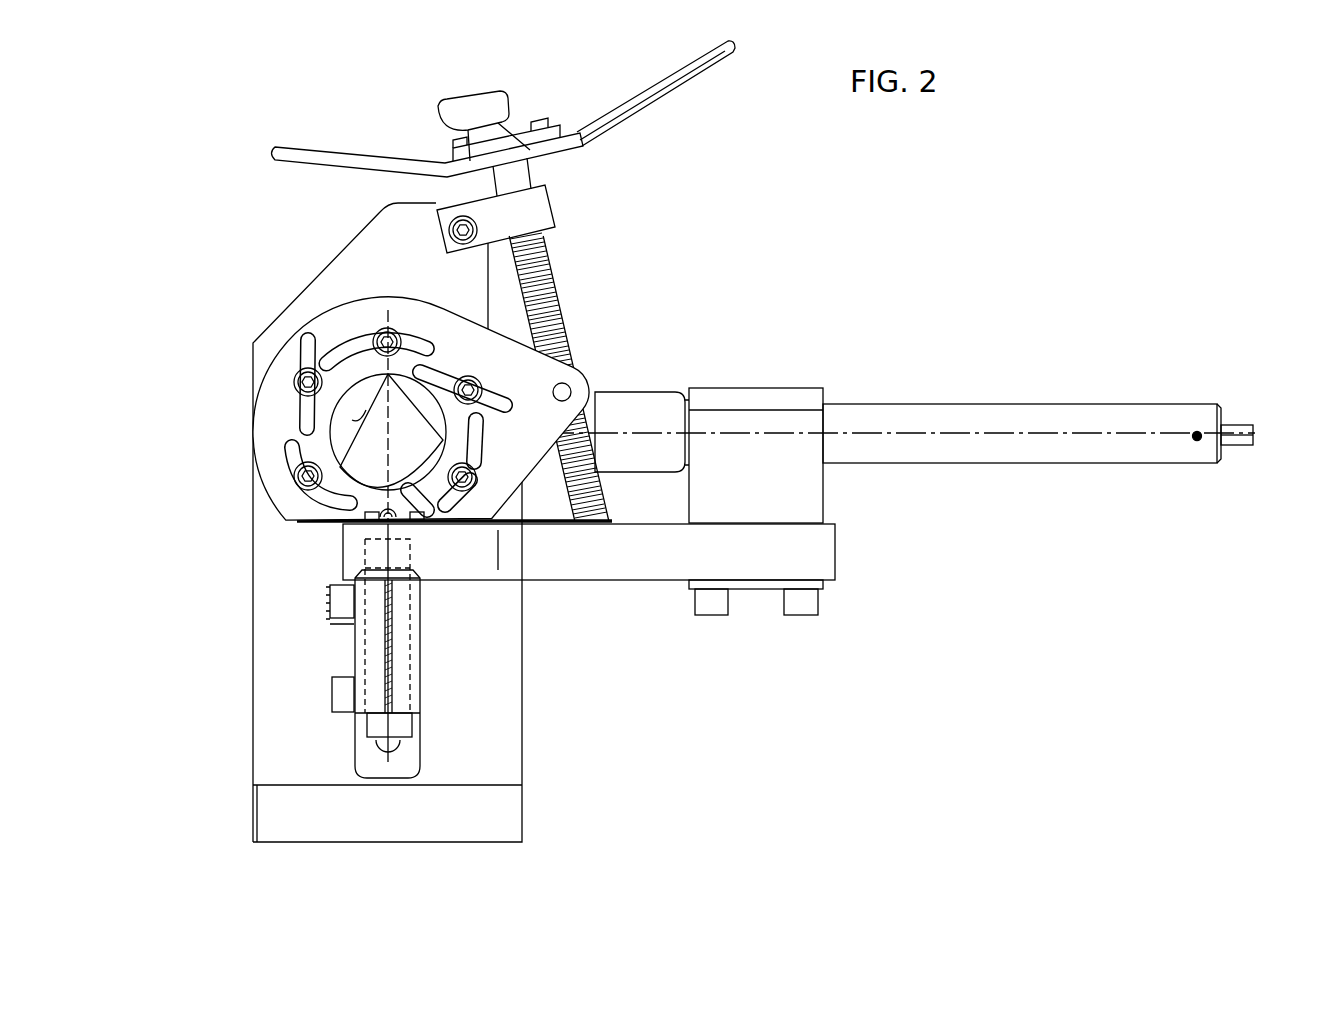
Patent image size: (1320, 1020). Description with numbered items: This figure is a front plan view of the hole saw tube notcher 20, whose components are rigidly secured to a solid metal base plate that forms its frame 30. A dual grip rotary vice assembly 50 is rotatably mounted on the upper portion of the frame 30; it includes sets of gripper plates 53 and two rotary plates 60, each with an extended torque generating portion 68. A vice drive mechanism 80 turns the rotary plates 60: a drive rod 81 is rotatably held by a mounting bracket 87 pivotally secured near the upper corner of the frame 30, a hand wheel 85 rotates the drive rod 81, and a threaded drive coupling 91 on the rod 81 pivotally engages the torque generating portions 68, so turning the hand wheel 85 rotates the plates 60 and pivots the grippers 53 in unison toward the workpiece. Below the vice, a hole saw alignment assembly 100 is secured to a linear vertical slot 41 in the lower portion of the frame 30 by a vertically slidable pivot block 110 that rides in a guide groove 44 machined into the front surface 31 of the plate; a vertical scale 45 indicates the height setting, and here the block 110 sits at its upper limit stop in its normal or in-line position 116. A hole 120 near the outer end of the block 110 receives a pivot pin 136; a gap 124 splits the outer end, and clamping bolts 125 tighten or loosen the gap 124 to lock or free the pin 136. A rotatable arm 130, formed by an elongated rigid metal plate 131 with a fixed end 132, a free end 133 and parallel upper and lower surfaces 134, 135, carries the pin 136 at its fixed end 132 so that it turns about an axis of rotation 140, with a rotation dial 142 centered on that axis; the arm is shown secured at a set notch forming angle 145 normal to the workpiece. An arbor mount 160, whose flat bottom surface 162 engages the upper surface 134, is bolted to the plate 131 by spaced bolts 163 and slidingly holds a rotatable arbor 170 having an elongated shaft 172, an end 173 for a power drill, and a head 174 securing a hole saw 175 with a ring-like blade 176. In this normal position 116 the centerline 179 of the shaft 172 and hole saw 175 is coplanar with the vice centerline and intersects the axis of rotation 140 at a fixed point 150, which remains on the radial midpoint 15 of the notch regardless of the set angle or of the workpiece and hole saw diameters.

The radial midpoint 15 is at (392, 435).
The hole saw tube notcher 20 is at (703, 296).
The base plate 30 is at (240, 678).
The front surface 31 is at (300, 746).
The vertical slot 41 is at (400, 748).
The guide groove 44 is at (425, 758).
The scale 45 is at (318, 600).
The dual grip rotary vice assembly 50 is at (314, 302).
The gripper plates 53 is at (369, 403).
The rotary plates 60 is at (265, 405).
The torque generating portion 68 is at (538, 389).
The vice drive mechanism 80 is at (552, 117).
The drive rod 81 is at (553, 283).
The hand wheel 85 is at (633, 111).
The mounting bracket 87 is at (537, 212).
The threaded drive coupling 91 is at (576, 380).
The hole saw alignment assembly 100 is at (759, 604).
The pivot block 110 is at (421, 610).
The in-line position 116 is at (266, 610).
The hole 120 is at (412, 630).
The gap 124 is at (388, 672).
The clamping bolts 125 is at (330, 692).
The rotatable arm 130 is at (586, 583).
The plate 131 is at (643, 582).
The fixed end 132 is at (355, 556).
The free end 133 is at (828, 555).
The upper surface 134 is at (641, 523).
The lower surface 135 is at (540, 582).
The pivot pin 136 is at (400, 655).
The axis of rotation 140 is at (387, 318).
The rotation dial 142 is at (300, 522).
The set notch forming angle 145 is at (289, 565).
The fixed point 150 is at (388, 434).
The arbor mount 160 is at (763, 388).
The bottom surface 162 is at (808, 523).
The bolts 163 is at (802, 612).
The rotatable arbor 170 is at (857, 395).
The shaft 172 is at (1030, 410).
The end 173 is at (1233, 425).
The head 174 is at (688, 392).
The hole saw 175 is at (684, 392).
The blade 176 is at (663, 352).
The centerline 179 is at (917, 433).